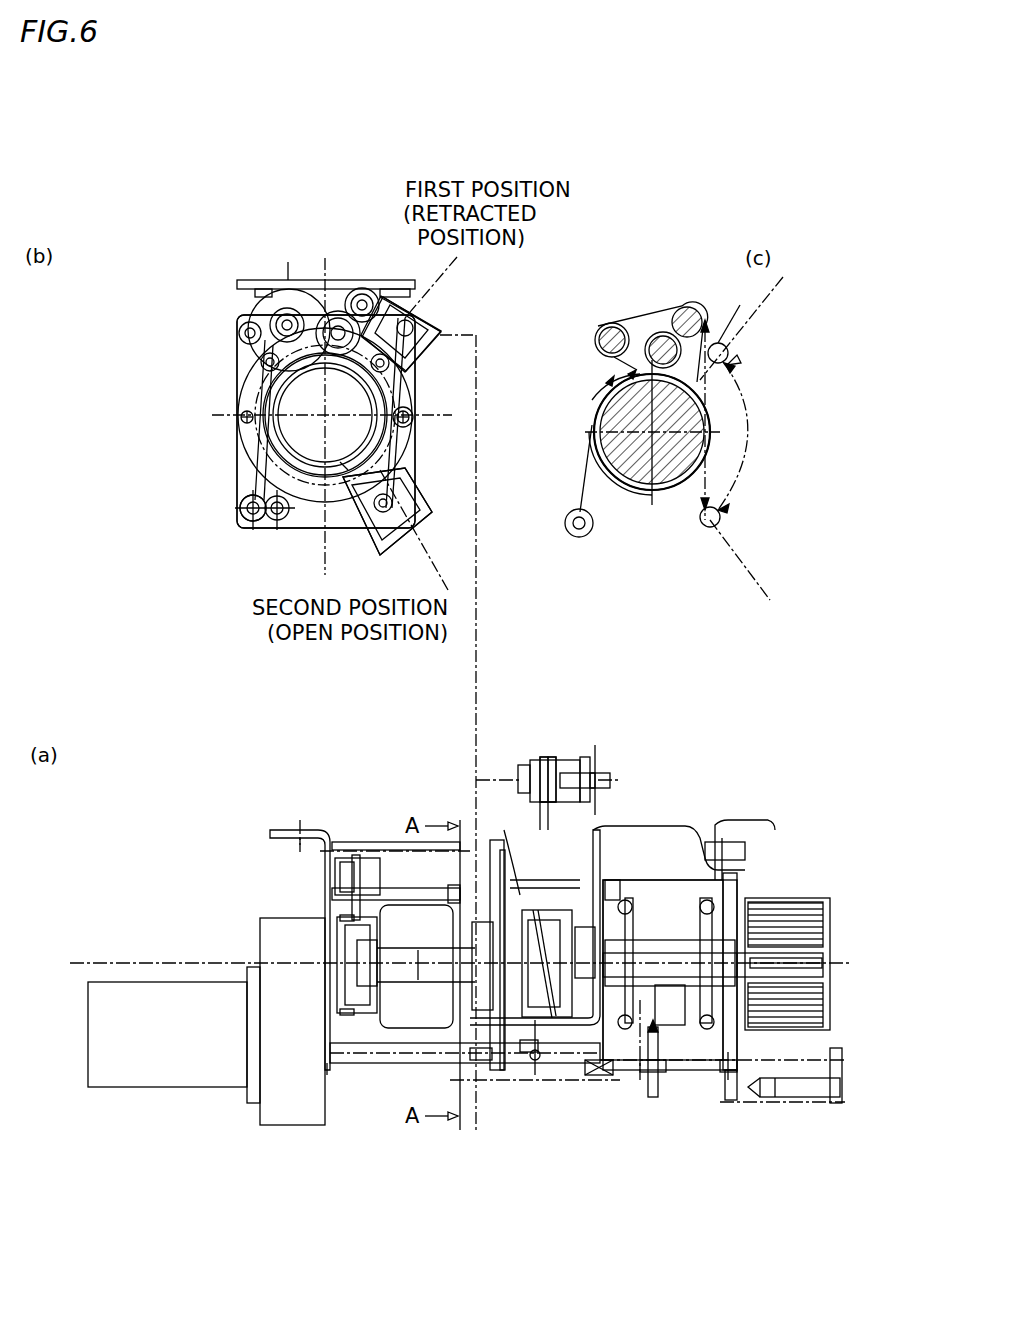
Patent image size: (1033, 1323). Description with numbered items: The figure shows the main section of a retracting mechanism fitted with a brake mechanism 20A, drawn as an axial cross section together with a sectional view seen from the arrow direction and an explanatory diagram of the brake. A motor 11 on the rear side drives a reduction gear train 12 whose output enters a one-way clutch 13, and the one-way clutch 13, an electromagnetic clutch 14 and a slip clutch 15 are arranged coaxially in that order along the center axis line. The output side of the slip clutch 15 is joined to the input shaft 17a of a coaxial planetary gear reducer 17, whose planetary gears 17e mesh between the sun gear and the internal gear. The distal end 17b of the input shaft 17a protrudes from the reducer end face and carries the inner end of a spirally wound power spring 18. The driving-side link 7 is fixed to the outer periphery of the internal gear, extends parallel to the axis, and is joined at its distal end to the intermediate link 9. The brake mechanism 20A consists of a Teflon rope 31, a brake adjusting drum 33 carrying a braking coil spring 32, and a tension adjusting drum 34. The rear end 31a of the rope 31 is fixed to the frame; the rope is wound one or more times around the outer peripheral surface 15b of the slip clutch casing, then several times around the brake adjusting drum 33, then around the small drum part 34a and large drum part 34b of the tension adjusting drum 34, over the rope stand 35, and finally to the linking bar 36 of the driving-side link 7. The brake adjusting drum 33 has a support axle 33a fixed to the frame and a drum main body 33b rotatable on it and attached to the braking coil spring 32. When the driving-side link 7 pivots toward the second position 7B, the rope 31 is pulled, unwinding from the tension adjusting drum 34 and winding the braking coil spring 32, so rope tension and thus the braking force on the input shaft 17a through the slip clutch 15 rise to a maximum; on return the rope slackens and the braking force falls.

The driving-side link 7 is at (430, 355).
The second position 7B is at (430, 500).
The intermediate link 9 is at (442, 326).
The motor 11 is at (222, 1088).
The reduction gear train 12 is at (296, 1092).
The one-way clutch 13 is at (360, 1015).
The electromagnetic clutch 14 is at (412, 1030).
The slip clutch 15 is at (518, 1168).
The outer peripheral surface 15b is at (315, 480).
The planetary gear reducer 17 is at (640, 1080).
The input shaft 17a is at (740, 960).
The distal end 17b is at (785, 958).
The planetary gears 17e is at (686, 1087).
The power spring 18 is at (800, 1090).
The brake mechanism 20A is at (215, 412).
The Teflon rope 31 is at (258, 472).
The rear end 31a is at (240, 508).
The braking coil spring 32 is at (578, 750).
The brake adjusting drum 33 is at (262, 364).
The support axle 33a is at (598, 780).
The drum main body 33b is at (538, 758).
The tension adjusting drum 34 is at (285, 310).
The small drum part 34a is at (640, 333).
The large drum part 34b is at (603, 325).
The rope stand 35 is at (362, 288).
The linking bar 36 is at (430, 372).